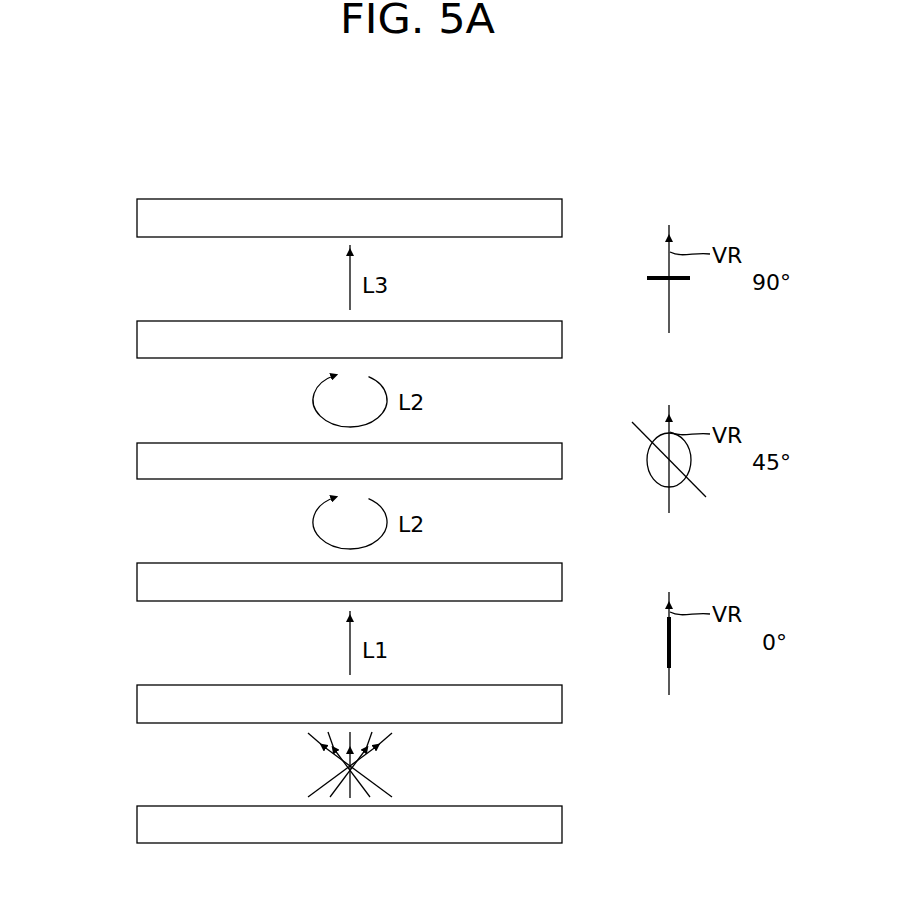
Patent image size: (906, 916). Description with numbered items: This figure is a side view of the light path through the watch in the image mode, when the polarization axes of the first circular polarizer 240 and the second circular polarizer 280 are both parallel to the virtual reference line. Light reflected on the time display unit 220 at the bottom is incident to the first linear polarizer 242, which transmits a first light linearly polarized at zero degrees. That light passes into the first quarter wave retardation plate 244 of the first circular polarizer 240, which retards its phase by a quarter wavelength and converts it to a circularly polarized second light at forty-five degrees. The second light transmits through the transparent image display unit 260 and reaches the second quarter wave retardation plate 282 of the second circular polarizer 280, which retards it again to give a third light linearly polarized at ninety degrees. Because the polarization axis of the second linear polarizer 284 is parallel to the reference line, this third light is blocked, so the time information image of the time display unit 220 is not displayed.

The time display unit 220 is at (147, 824).
The first circular polarizer 240 is at (66, 565).
The first linear polarizer 242 is at (147, 703).
The first quarter wave retardation plate 244 is at (147, 580).
The transparent image display unit 260 is at (147, 460).
The second circular polarizer 280 is at (66, 200).
The second quarter wave retardation plate 282 is at (147, 339).
The second linear polarizer 284 is at (147, 216).